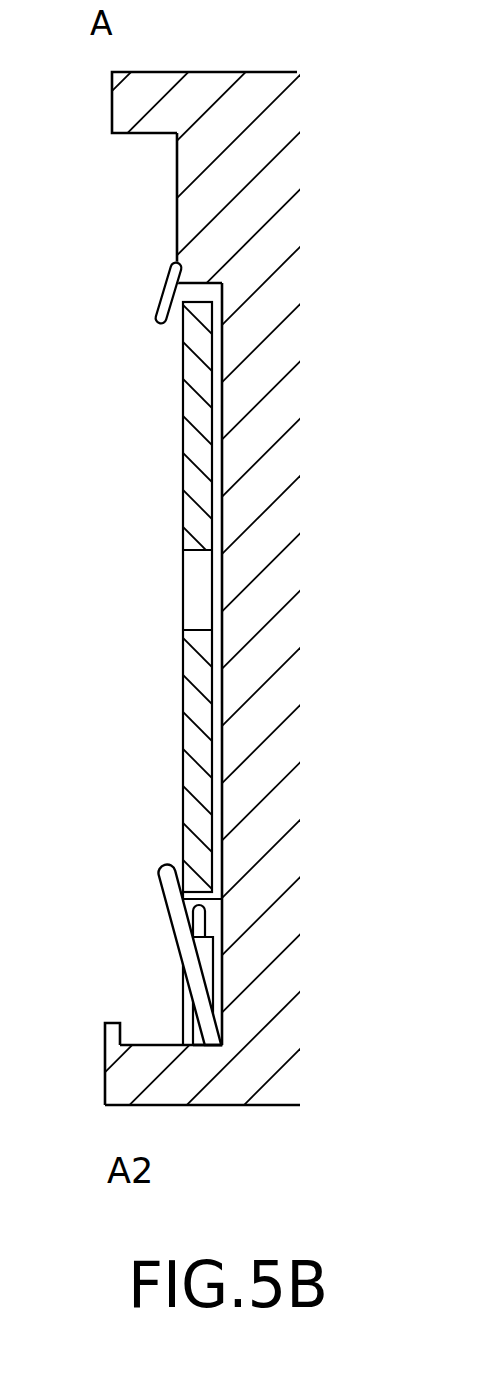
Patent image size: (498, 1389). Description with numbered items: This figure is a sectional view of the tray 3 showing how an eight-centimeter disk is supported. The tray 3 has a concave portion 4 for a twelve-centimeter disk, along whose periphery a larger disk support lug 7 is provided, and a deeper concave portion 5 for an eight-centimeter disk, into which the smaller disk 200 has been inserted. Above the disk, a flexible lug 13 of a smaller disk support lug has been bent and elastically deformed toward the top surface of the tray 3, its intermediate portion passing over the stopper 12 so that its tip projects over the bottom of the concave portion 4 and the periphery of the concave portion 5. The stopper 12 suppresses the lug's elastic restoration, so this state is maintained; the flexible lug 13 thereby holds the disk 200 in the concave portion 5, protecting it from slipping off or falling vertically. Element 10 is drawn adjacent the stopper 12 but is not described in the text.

The tray 3 is at (250, 95).
The concave portion for a 12 cm disk 4 is at (177, 173).
The concave portion for an 8 cm disk 5 is at (219, 612).
The larger disk support lug 7 is at (105, 1038).
The support block 10 is at (222, 956).
The stopper 12 is at (212, 923).
The flexible lug 13 is at (163, 300).
The 8 cm disk 200 is at (195, 478).